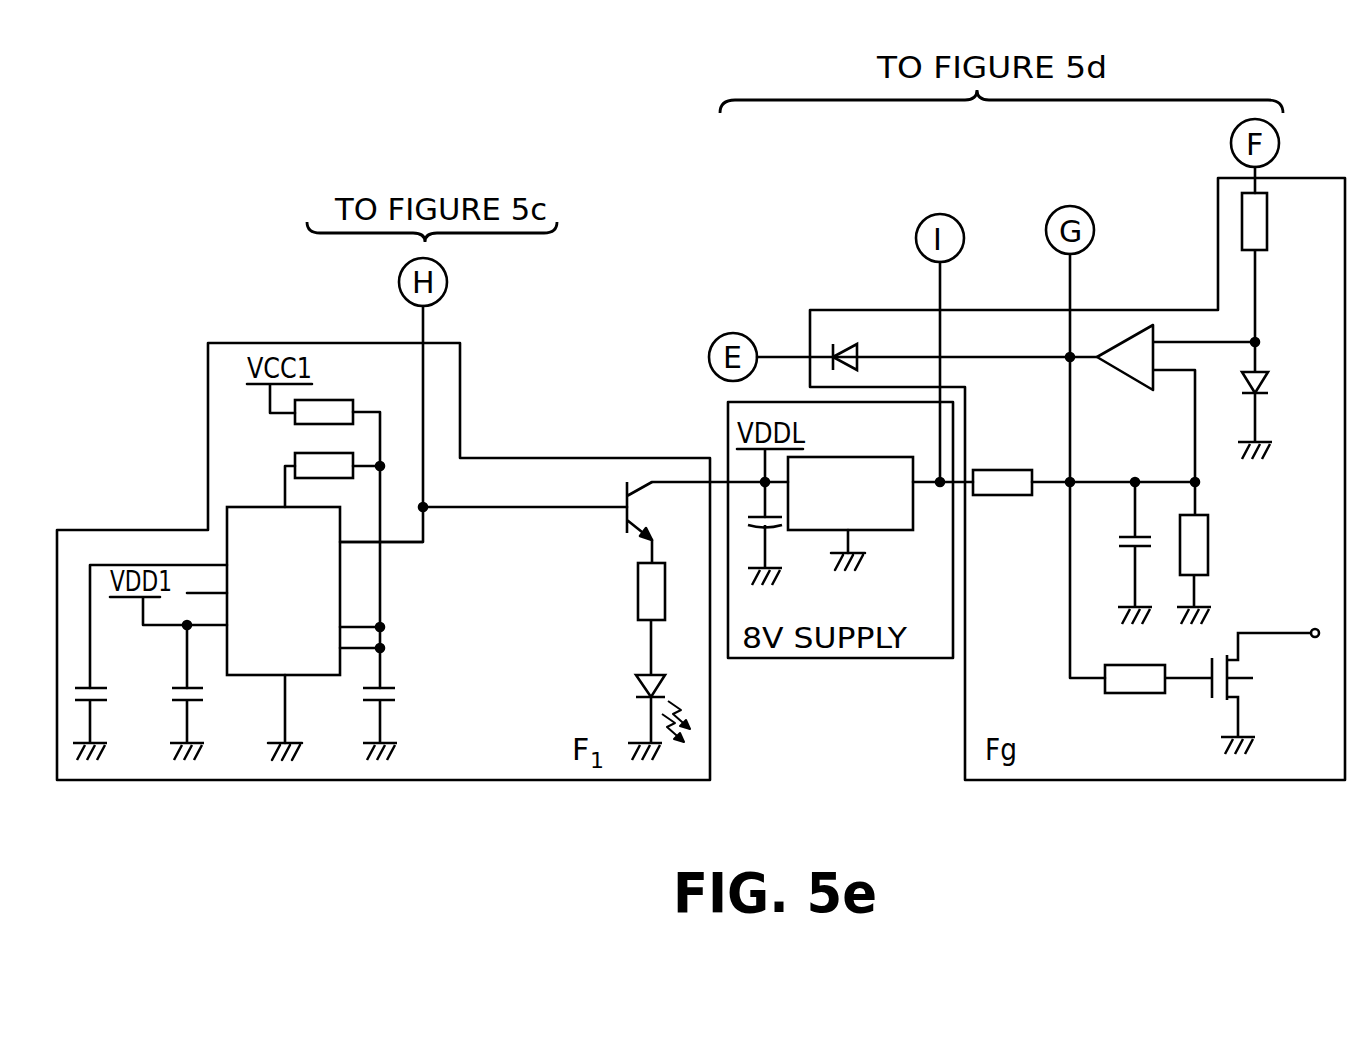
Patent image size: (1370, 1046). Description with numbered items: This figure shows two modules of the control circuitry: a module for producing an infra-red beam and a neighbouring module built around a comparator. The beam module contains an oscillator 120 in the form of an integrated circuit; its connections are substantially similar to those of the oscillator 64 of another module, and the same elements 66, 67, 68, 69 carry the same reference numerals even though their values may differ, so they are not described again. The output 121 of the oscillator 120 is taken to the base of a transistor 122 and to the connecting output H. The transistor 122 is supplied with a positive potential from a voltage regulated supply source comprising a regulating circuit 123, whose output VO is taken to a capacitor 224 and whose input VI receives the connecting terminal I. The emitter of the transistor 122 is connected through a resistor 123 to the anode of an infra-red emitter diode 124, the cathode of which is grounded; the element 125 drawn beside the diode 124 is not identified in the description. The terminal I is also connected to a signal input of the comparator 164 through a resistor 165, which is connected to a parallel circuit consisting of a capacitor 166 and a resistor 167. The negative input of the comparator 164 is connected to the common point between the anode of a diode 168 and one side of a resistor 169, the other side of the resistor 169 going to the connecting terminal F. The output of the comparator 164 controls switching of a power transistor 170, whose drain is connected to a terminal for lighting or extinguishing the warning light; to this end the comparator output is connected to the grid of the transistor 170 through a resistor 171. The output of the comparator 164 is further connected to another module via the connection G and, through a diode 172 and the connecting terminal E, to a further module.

The oscillator 64 is at (98, 702).
The capacitor 66 is at (198, 702).
The capacitor 67 is at (397, 686).
The resistor 68 is at (340, 400).
The resistor 69 is at (304, 453).
The oscillator 120 is at (283, 591).
The output 121 is at (343, 545).
The transistor 122 is at (665, 522).
The regulating circuit 123 is at (638, 604).
The infra-red emitter diode 124 is at (636, 686).
The emitted light 125 is at (684, 714).
The comparator 164 is at (1133, 372).
The resistor 165 is at (1003, 470).
The capacitor 166 is at (1125, 543).
The resistor 167 is at (1200, 557).
The diode 168 is at (1268, 383).
The resistor 169 is at (1267, 232).
The power transistor 170 is at (1238, 690).
The resistor 171 is at (1120, 693).
The diode 172 is at (857, 356).
The capacitor 224 is at (772, 528).